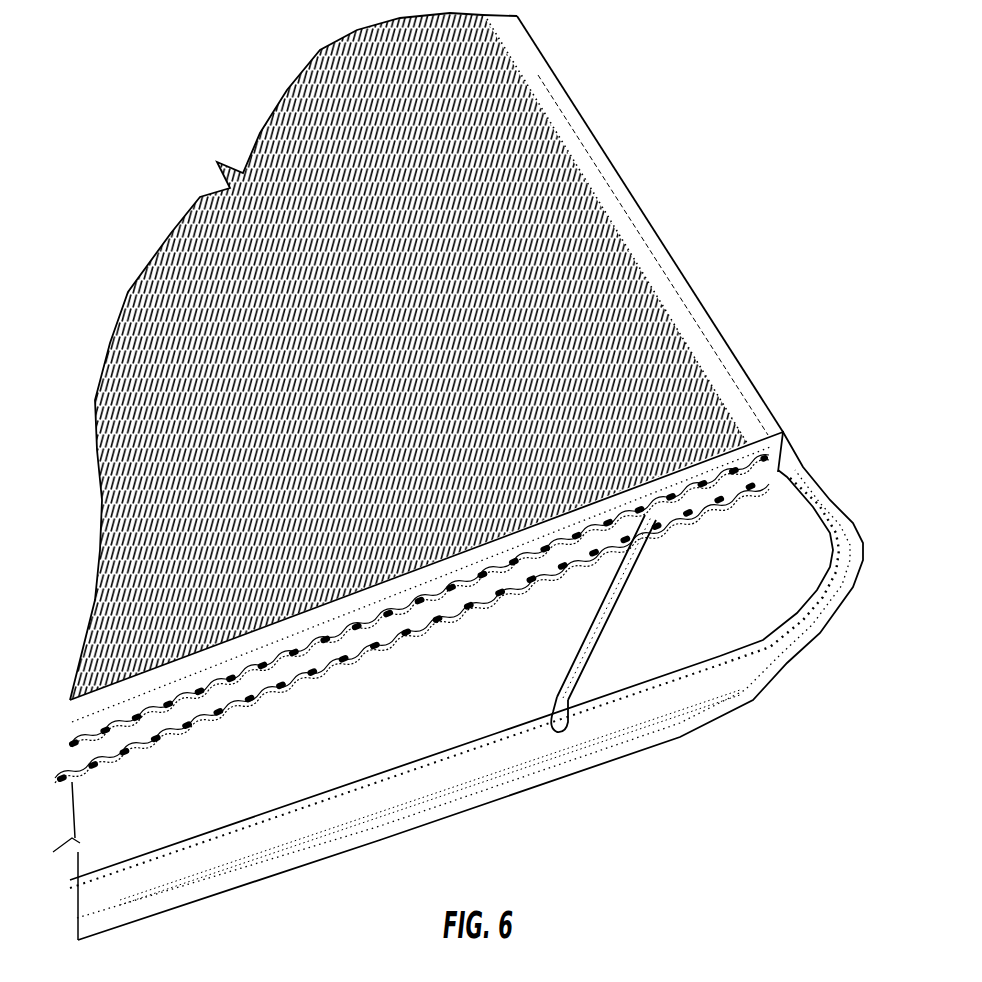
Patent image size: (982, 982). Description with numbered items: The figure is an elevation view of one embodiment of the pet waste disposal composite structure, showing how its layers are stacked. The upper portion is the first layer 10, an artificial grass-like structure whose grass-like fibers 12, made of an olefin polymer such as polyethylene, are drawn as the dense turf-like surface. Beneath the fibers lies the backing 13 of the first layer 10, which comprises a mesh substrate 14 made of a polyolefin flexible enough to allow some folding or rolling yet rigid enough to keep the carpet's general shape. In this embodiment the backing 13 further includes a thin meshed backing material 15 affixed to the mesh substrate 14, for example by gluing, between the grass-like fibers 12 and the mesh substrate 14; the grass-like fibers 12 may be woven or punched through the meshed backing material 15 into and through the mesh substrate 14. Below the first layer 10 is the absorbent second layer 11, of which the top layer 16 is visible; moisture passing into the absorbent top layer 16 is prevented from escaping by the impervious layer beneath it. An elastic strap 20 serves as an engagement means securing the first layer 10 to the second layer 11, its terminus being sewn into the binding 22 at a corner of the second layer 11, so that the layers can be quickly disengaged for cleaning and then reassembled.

The first layer 10 is at (725, 405).
The second layer 11 is at (507, 767).
The grass-like fibers 12 is at (603, 323).
The backing 13 is at (760, 440).
The mesh substrate 14 is at (805, 493).
The meshed backing material 15 is at (143, 623).
The top layer 16 is at (440, 712).
The elastic strap 20 is at (583, 663).
The binding 22 is at (567, 733).